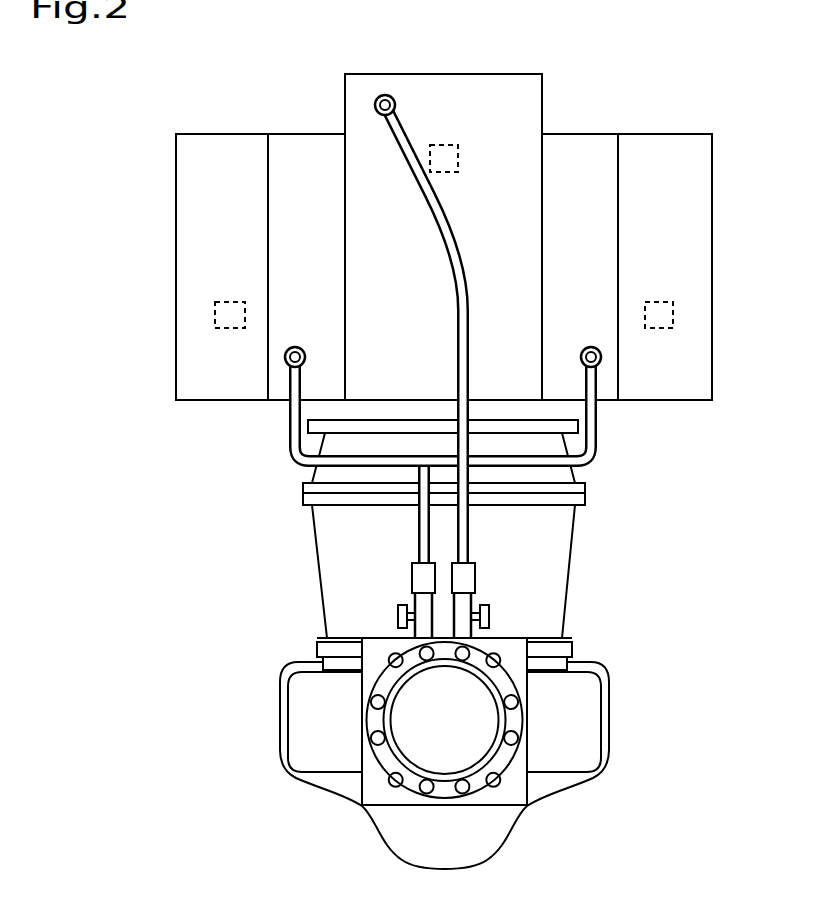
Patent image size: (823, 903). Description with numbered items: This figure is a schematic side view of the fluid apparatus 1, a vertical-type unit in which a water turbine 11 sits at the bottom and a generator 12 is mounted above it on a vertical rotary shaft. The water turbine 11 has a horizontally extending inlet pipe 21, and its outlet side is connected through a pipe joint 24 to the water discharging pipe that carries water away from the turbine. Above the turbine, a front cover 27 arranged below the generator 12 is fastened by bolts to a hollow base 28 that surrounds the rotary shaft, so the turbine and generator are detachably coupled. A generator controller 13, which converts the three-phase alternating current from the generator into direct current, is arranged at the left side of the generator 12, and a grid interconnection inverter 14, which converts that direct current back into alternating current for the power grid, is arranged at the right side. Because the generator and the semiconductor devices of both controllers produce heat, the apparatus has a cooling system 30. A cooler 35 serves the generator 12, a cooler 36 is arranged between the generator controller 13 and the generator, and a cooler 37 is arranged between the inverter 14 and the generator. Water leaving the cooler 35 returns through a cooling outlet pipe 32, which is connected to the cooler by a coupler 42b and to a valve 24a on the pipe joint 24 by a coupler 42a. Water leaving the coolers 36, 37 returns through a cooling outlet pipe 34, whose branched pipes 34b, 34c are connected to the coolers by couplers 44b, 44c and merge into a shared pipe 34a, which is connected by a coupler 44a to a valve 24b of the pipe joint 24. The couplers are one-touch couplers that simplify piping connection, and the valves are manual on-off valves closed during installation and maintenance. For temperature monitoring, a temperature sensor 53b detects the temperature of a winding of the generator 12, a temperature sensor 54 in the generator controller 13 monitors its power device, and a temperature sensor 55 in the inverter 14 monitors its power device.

The apparatus 1 is at (741, 68).
The water turbine 11 is at (579, 806).
The generator 12 is at (538, 150).
The generator controller 13 is at (212, 144).
The grid interconnection inverter 14 is at (665, 144).
The inlet pipe 21 is at (302, 748).
The pipe joint 24 is at (373, 810).
The valve 24a is at (490, 614).
The valve 24b is at (398, 617).
The front cover 27 is at (575, 475).
The hollow base 28 is at (575, 548).
The cooling system 30 is at (261, 462).
The cooling outlet pipe 32 is at (466, 256).
The cooling outlet pipe 34 is at (292, 480).
The shared pipe 34a is at (417, 521).
The branched pipe 34b is at (288, 423).
The branched pipe 34c is at (603, 433).
The cooler 35 is at (500, 73).
The cooler 36 is at (297, 144).
The cooler 37 is at (590, 144).
The coupler 42a is at (477, 572).
The coupler 42b is at (388, 94).
The coupler 44a is at (412, 576).
The coupler 44b is at (296, 346).
The coupler 44c is at (590, 346).
The temperature sensor 53b is at (458, 158).
The temperature sensor 54 is at (228, 302).
The temperature sensor 55 is at (660, 302).